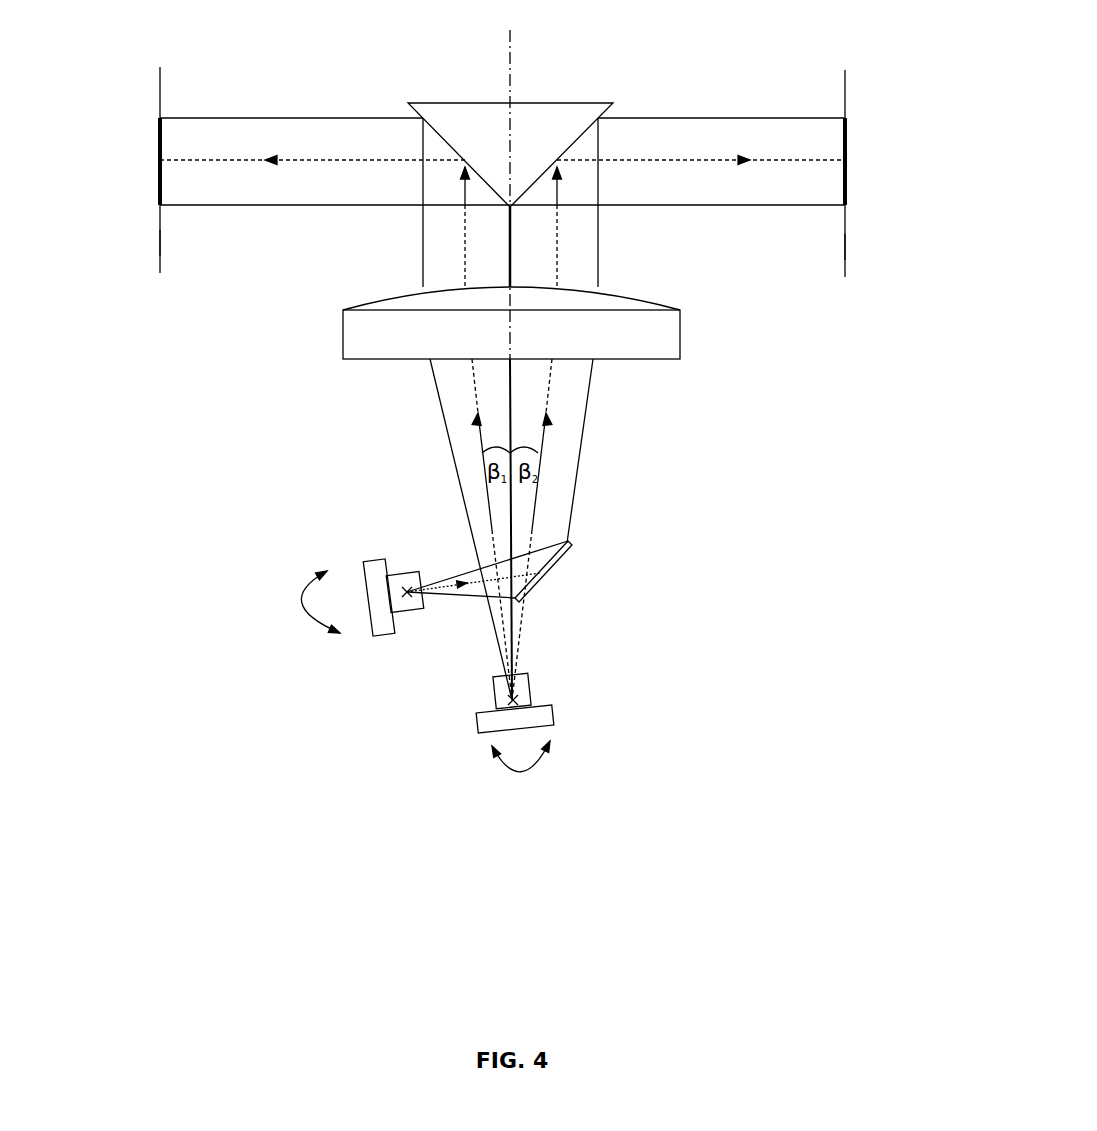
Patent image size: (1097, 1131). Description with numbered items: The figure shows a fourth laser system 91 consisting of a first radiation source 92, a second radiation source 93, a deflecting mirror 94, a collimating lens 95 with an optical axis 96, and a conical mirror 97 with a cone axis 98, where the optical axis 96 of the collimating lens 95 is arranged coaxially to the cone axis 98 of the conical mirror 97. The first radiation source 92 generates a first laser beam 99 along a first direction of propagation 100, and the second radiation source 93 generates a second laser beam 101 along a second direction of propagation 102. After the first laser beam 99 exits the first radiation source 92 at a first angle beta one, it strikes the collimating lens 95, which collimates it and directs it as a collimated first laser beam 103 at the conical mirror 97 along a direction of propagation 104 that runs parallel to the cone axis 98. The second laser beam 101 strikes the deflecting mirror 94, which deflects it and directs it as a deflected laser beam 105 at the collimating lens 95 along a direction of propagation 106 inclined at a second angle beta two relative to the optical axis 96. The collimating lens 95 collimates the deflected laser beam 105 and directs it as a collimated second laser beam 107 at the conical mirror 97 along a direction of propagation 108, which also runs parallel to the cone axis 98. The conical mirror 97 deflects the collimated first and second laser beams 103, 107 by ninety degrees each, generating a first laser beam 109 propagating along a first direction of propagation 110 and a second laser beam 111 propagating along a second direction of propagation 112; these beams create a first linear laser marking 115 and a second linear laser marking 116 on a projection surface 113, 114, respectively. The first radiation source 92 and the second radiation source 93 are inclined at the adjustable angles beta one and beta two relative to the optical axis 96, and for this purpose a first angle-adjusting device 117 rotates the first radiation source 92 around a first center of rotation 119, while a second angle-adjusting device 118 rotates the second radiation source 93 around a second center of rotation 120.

The laser system 91 is at (770, 563).
The first radiation source 92 is at (495, 720).
The second radiation source 93 is at (375, 580).
The deflecting mirror 94 is at (575, 558).
The collimating lens 95 is at (370, 330).
The optical axis 96 is at (515, 333).
The conical mirror 97 is at (572, 118).
The cone axis 98 is at (510, 56).
The first laser beam 99 is at (516, 640).
The first direction of propagation 100 is at (480, 447).
The second laser beam 101 is at (465, 600).
The second direction of propagation 102 is at (438, 582).
The collimated first laser beam 103 is at (423, 252).
The direction of propagation 104 is at (463, 185).
The deflected laser beam 105 is at (575, 493).
The direction of propagation 106 is at (548, 445).
The collimated second laser beam 107 is at (598, 257).
The direction of propagation 108 is at (560, 188).
The first laser beam 109 is at (343, 118).
The first direction of propagation 110 is at (290, 160).
The second laser beam 111 is at (668, 118).
The second direction of propagation 112 is at (722, 160).
The projection surface 113 is at (163, 243).
The projection surface 114 is at (845, 247).
The first linear laser marking 115 is at (163, 183).
The second linear laser marking 116 is at (845, 188).
The first angle-adjusting device 117 is at (528, 785).
The second angle-adjusting device 118 is at (258, 608).
The first center of rotation 119 is at (540, 703).
The second center of rotation 120 is at (407, 598).